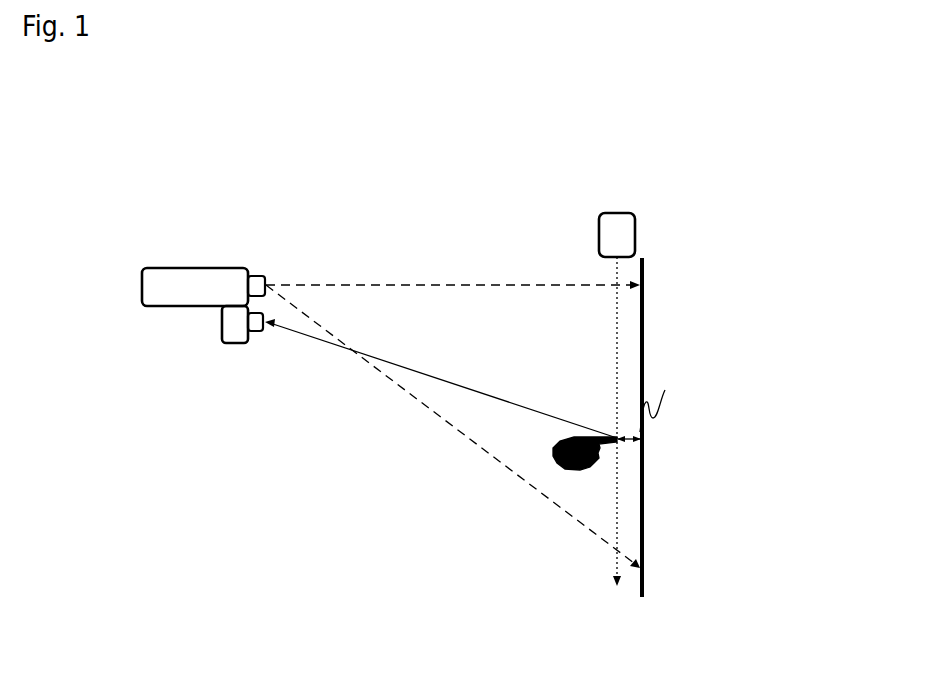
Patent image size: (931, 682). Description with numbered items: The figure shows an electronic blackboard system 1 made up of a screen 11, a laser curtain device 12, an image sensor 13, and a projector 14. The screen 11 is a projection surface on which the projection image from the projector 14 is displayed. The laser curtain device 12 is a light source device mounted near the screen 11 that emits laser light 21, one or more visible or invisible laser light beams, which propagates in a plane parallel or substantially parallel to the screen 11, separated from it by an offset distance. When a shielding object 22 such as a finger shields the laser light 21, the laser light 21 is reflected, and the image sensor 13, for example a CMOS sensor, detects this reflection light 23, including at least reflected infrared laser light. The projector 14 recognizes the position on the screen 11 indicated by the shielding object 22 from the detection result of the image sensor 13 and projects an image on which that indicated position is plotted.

The electronic blackboard system 1 is at (442, 186).
The screen 11 is at (644, 270).
The laser curtain device 12 is at (616, 212).
The image sensor 13 is at (233, 344).
The projector 14 is at (169, 267).
The laser light 21 is at (593, 580).
The shielding object 22 is at (556, 468).
The reflection light 23 is at (541, 354).